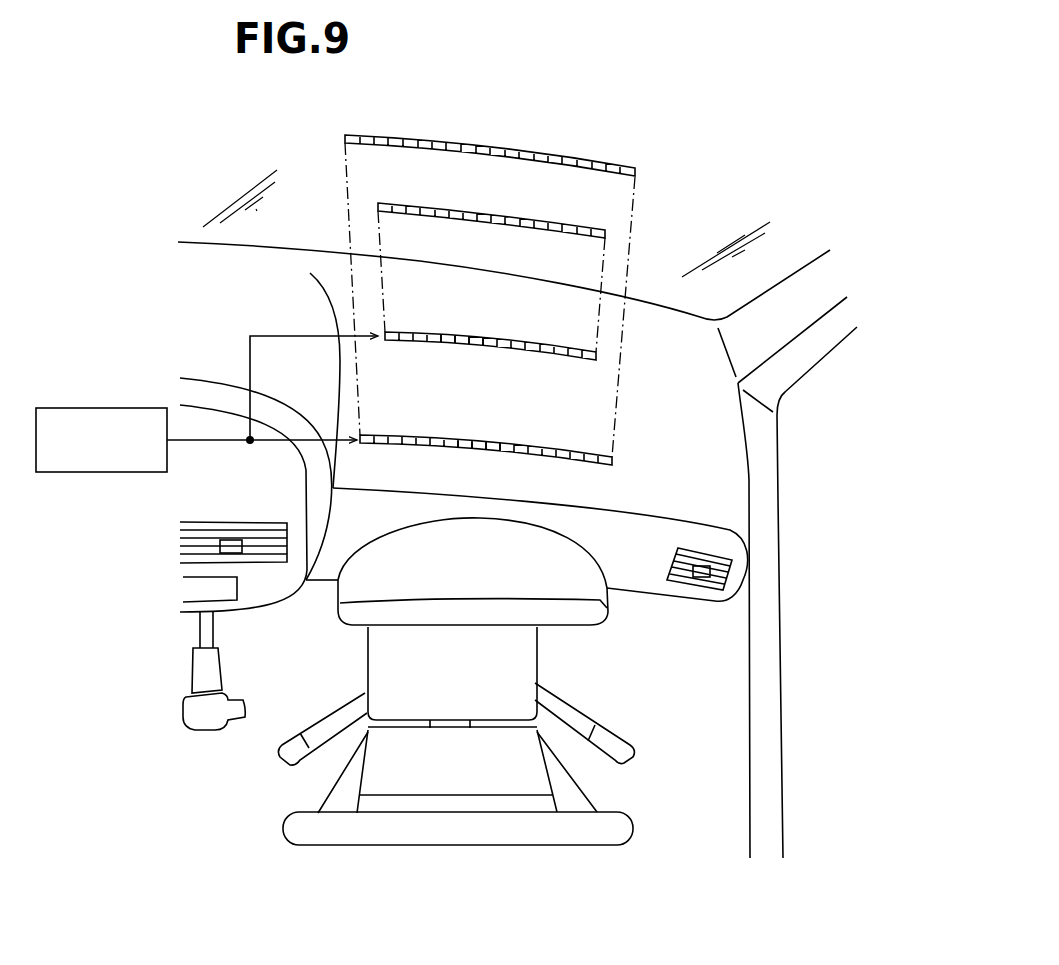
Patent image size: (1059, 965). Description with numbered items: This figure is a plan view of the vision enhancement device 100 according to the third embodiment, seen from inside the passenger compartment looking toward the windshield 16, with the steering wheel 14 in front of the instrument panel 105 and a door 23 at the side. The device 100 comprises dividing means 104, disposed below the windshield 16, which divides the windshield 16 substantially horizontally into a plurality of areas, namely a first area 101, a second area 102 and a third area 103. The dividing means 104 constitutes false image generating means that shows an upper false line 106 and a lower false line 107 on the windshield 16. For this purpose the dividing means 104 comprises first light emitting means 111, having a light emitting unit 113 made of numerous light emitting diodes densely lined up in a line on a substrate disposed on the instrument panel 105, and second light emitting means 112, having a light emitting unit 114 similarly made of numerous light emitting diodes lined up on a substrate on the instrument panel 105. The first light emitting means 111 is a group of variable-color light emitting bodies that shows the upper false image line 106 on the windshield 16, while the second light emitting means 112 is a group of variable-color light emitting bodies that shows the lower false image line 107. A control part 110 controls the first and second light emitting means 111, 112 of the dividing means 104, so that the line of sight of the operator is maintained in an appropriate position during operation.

The vision enhancement device 100 is at (167, 113).
The instrument panel 105 is at (193, 238).
The control part 110 is at (100, 405).
The upper false line 106 is at (400, 133).
The lower false line 107 is at (422, 204).
The first area 101 is at (530, 132).
The second area 102 is at (530, 192).
The third area 103 is at (540, 258).
The dividing means 104 is at (570, 327).
The second light emitting means 112 is at (428, 318).
The light emitting unit 114 is at (472, 334).
The first light emitting means 111 is at (418, 427).
The light emitting unit 113 is at (497, 442).
The windshield 16 is at (735, 230).
The door 23 is at (768, 507).
The steering wheel 14 is at (640, 823).